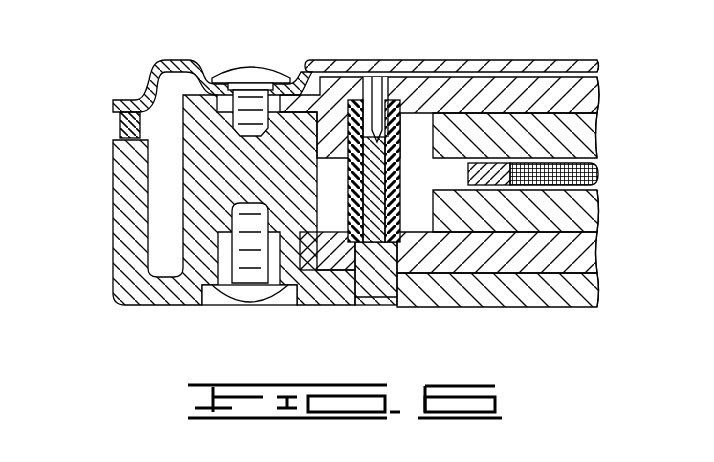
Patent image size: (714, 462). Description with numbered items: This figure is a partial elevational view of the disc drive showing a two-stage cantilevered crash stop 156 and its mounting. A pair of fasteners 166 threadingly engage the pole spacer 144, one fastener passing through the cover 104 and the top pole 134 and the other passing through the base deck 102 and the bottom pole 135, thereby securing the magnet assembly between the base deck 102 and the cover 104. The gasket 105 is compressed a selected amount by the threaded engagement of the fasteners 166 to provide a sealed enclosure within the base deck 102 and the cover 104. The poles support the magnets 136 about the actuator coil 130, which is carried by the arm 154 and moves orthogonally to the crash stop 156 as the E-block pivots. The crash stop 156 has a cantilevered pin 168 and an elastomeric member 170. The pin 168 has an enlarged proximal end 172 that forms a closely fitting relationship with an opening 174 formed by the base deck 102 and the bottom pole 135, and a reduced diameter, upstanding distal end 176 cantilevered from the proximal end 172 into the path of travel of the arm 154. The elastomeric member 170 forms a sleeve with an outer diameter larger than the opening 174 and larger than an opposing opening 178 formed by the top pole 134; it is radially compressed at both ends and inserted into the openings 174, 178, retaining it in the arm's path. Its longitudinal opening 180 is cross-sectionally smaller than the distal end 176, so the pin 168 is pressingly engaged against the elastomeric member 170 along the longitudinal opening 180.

The base deck 102 is at (583, 306).
The cover 104 is at (577, 62).
The gasket 105 is at (127, 127).
The actuator coil 130 is at (597, 173).
The top pole 134 is at (600, 93).
The bottom pole 135 is at (600, 250).
The magnets 136 is at (600, 130).
The pole spacer 144 is at (183, 178).
The arm 154 is at (482, 176).
The crash stop 156 is at (320, 62).
The fasteners 166 is at (252, 62).
The cantilevered pin 168 is at (393, 238).
The elastomeric member 170 is at (485, 62).
The enlarged proximal end 172 is at (372, 283).
The opening 174 is at (390, 307).
The distal end 176 is at (366, 100).
The opposing opening 178 is at (387, 93).
The longitudinal opening 180 is at (377, 122).